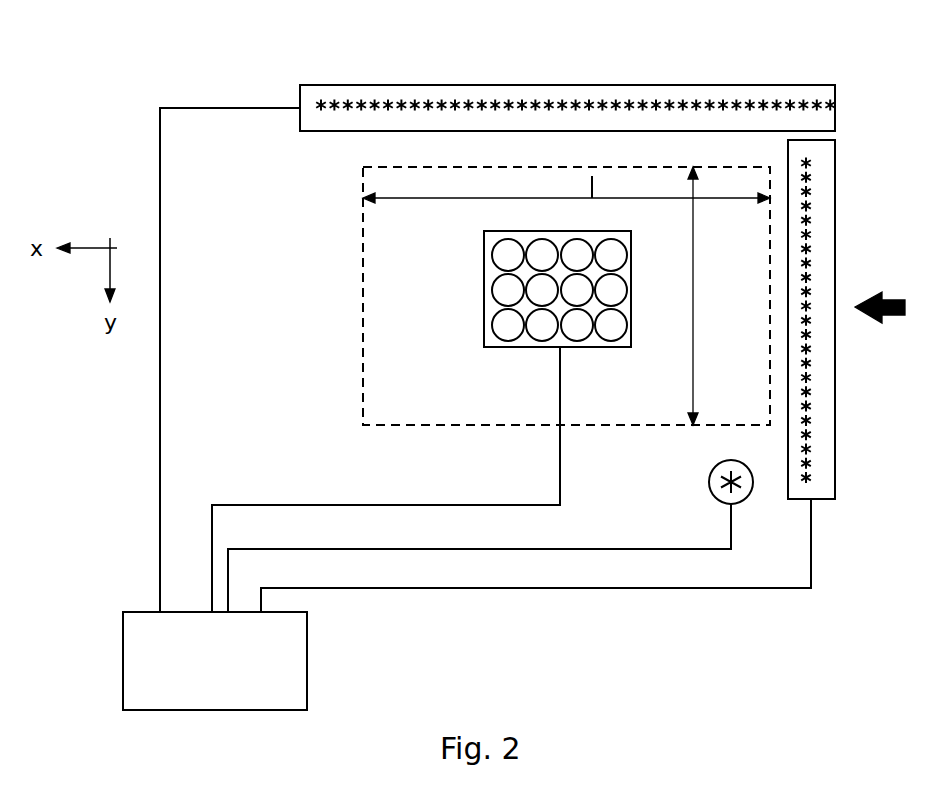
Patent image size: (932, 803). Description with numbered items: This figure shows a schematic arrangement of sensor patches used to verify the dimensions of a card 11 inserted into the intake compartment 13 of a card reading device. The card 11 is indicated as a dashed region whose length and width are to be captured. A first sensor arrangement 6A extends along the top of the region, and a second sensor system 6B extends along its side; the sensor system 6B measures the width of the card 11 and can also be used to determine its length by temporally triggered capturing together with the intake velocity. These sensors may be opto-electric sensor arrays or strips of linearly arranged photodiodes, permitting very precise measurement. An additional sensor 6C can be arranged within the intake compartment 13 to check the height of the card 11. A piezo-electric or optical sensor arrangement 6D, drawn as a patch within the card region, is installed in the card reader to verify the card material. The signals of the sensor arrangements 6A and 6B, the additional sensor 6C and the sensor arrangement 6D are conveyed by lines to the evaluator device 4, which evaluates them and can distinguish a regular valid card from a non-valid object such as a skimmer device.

The intake compartment 13 is at (178, 66).
The evaluator device 4 is at (215, 661).
The sensor arrangement 6A is at (832, 104).
The sensor system 6B is at (822, 479).
The additional sensor 6C is at (746, 490).
The sensor arrangement 6D is at (523, 340).
The card 11 is at (376, 216).